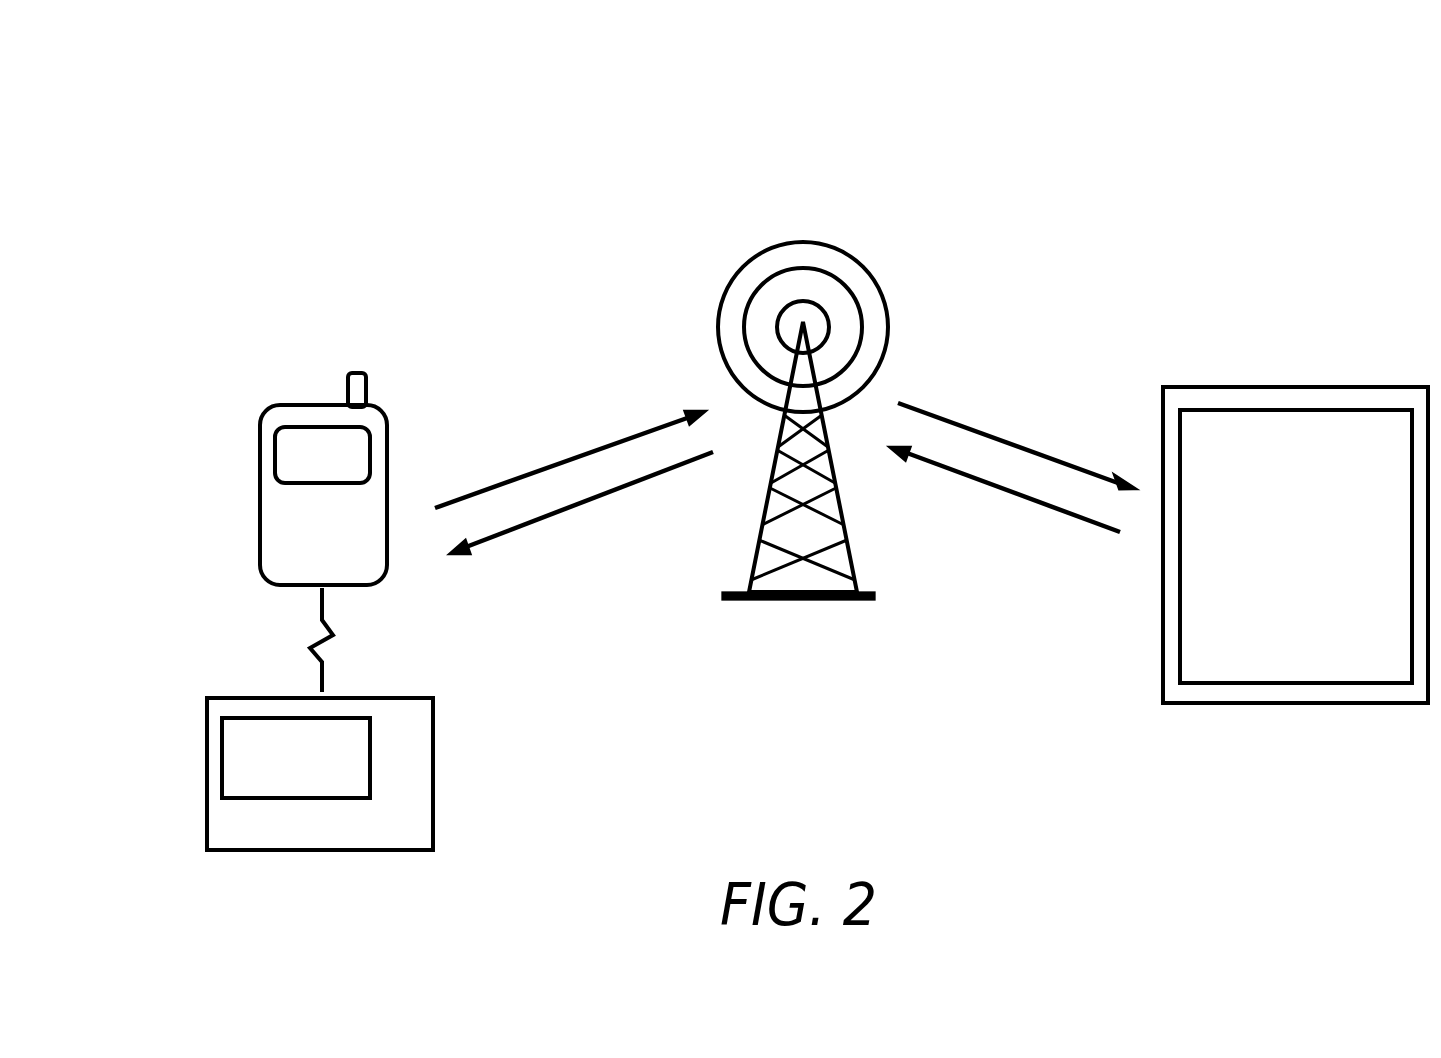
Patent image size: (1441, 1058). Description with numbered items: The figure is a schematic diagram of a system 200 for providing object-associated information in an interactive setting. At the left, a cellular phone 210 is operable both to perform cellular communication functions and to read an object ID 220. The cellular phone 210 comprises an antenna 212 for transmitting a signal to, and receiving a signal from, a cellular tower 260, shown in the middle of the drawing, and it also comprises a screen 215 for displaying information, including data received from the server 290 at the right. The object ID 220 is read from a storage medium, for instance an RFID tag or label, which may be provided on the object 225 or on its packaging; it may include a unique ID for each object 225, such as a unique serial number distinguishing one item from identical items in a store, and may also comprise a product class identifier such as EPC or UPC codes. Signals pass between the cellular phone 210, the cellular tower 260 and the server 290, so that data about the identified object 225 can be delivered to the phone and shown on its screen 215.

The system 200 is at (830, 138).
The cellular phone 210 is at (260, 512).
The antenna 212 is at (366, 390).
The screen 215 is at (348, 468).
The object ID 220 is at (222, 752).
The object 225 is at (343, 838).
The cellular tower 260 is at (875, 288).
The server 290 is at (1320, 576).